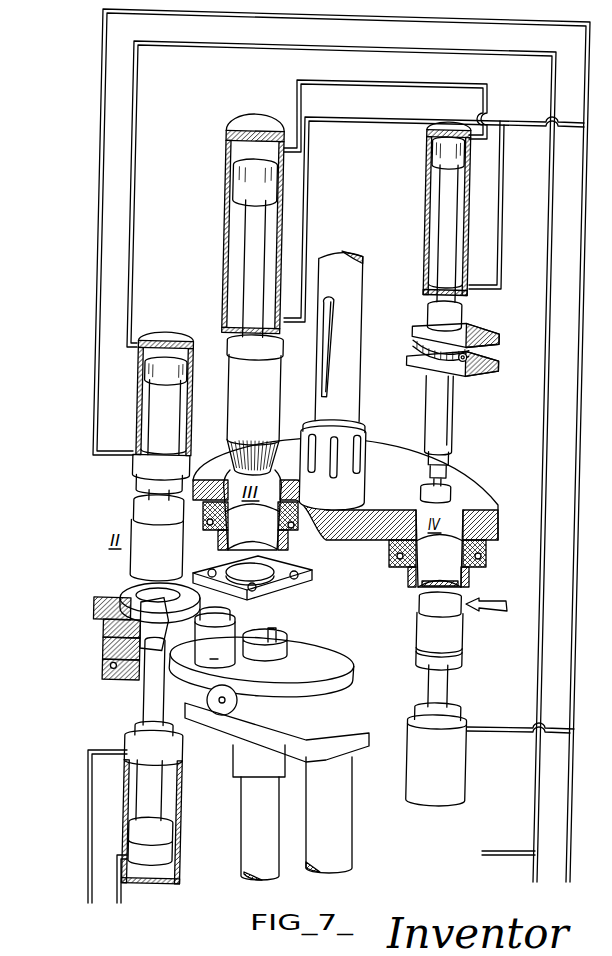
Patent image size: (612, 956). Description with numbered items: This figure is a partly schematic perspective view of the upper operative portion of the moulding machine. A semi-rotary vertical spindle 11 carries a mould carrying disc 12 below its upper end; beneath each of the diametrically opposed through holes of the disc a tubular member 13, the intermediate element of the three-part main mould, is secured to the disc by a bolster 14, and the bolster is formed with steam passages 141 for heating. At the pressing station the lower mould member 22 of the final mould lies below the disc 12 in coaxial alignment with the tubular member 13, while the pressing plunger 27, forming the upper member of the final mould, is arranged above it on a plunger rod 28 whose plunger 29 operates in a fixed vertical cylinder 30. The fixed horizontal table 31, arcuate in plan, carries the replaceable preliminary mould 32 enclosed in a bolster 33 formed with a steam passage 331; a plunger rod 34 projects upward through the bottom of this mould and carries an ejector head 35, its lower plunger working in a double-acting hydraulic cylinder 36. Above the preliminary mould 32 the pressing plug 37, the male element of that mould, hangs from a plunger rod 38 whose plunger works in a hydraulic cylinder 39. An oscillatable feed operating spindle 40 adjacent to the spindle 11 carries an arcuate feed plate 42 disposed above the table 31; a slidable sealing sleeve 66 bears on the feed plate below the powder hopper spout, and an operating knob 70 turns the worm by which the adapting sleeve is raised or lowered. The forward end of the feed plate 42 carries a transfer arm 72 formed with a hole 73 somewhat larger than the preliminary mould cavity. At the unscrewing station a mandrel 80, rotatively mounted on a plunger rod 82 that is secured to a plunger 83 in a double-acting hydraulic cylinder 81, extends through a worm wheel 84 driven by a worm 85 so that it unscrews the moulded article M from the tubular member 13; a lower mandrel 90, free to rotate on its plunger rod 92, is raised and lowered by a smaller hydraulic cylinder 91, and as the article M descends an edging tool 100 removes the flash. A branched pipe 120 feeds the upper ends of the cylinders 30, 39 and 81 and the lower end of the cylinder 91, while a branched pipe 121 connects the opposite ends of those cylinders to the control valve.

The vertical spindle 11 is at (356, 389).
The mould carrying disc 12 is at (345, 489).
The tubular member 13 is at (222, 548).
The bolster 14 is at (288, 531).
The steam passage 141 is at (212, 528).
The lower mould member 22 is at (262, 577).
The pressing plunger 27 is at (243, 412).
The plunger rod 28 is at (255, 269).
The plunger 29 is at (245, 181).
The fixed vertical cylinder 30 is at (224, 238).
The fixed horizontal table 31 is at (250, 738).
The preliminary mould 32 is at (103, 627).
The bolster 33 is at (105, 652).
The steam passage 331 is at (118, 664).
The plunger rod 34 is at (145, 703).
The ejector head 35 is at (105, 640).
The double-acting hydraulic cylinder 36 is at (184, 813).
The pressing plug 37 is at (157, 537).
The plunger rod 38 is at (152, 495).
The double-acting hydraulic cylinder 39 is at (136, 405).
The feed operating spindle 40 is at (243, 857).
The arcuate feed plate 42 is at (262, 667).
The sealing sleeve 66 is at (233, 656).
The operating knob 70 is at (216, 712).
The transfer arm 72 is at (138, 662).
The hole 73 is at (136, 585).
The mandrel 80 is at (455, 500).
The double-acting hydraulic cylinder 81 is at (423, 208).
The plunger rod 82 is at (442, 235).
The plunger 83 is at (425, 152).
The worm wheel 84 is at (415, 345).
The worm 85 is at (490, 345).
The lower mandrel 90 is at (420, 605).
The hydraulic cylinder 91 is at (452, 762).
The plunger rod 92 is at (447, 682).
The edging tool 100 is at (480, 598).
The branched pipe 120 is at (232, 47).
The branched pipe 121 is at (100, 251).
The moulded article M is at (416, 580).